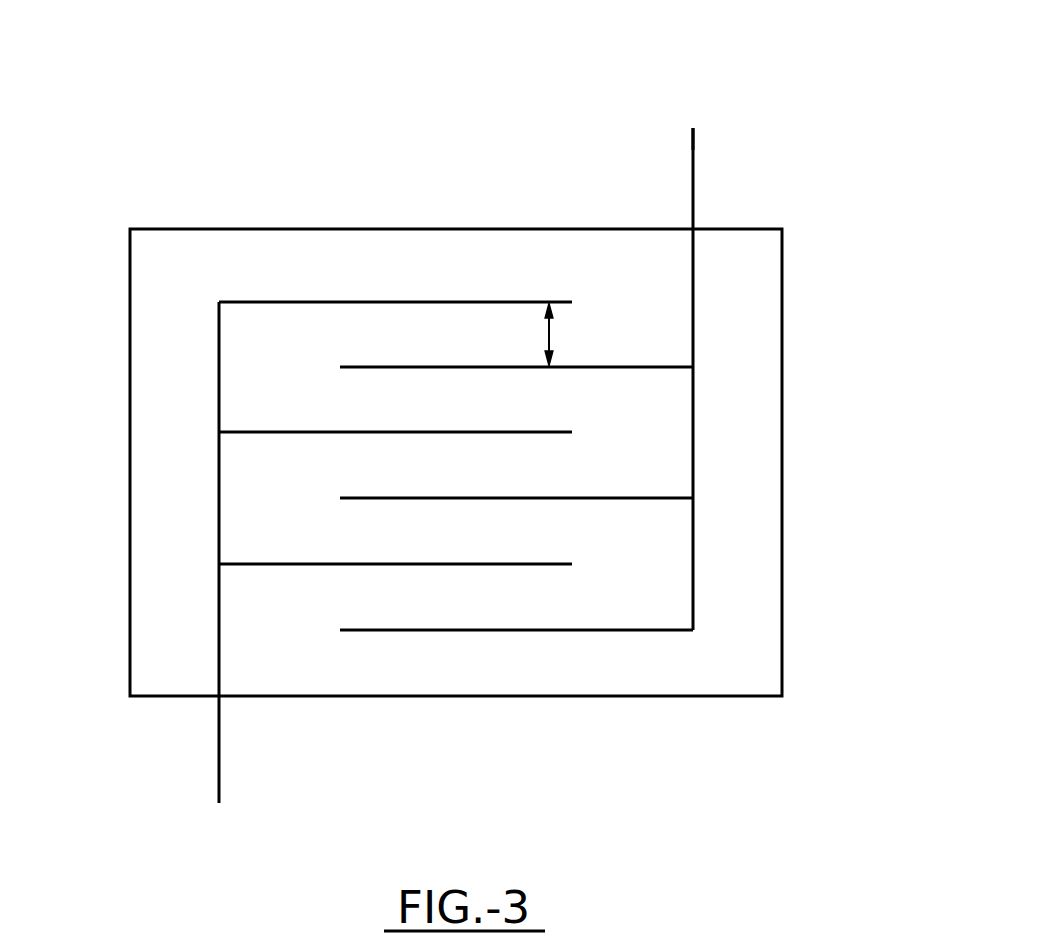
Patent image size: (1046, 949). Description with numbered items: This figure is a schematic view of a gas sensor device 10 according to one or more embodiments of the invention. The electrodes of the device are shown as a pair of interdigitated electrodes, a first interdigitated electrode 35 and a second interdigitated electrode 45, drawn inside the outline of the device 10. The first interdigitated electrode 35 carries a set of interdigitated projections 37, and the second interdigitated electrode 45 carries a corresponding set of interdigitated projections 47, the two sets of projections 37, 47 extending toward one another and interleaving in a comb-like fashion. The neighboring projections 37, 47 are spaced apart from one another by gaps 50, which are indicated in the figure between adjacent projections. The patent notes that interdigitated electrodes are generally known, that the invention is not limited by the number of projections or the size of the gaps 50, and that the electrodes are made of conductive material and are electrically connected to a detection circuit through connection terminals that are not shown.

The gas sensor device 10 is at (743, 120).
The interdigitated electrode 35 is at (595, 448).
The interdigitated projections 37 is at (444, 631).
The interdigitated electrode 45 is at (315, 479).
The interdigitated projections 47 is at (337, 302).
The gaps 50 is at (553, 333).